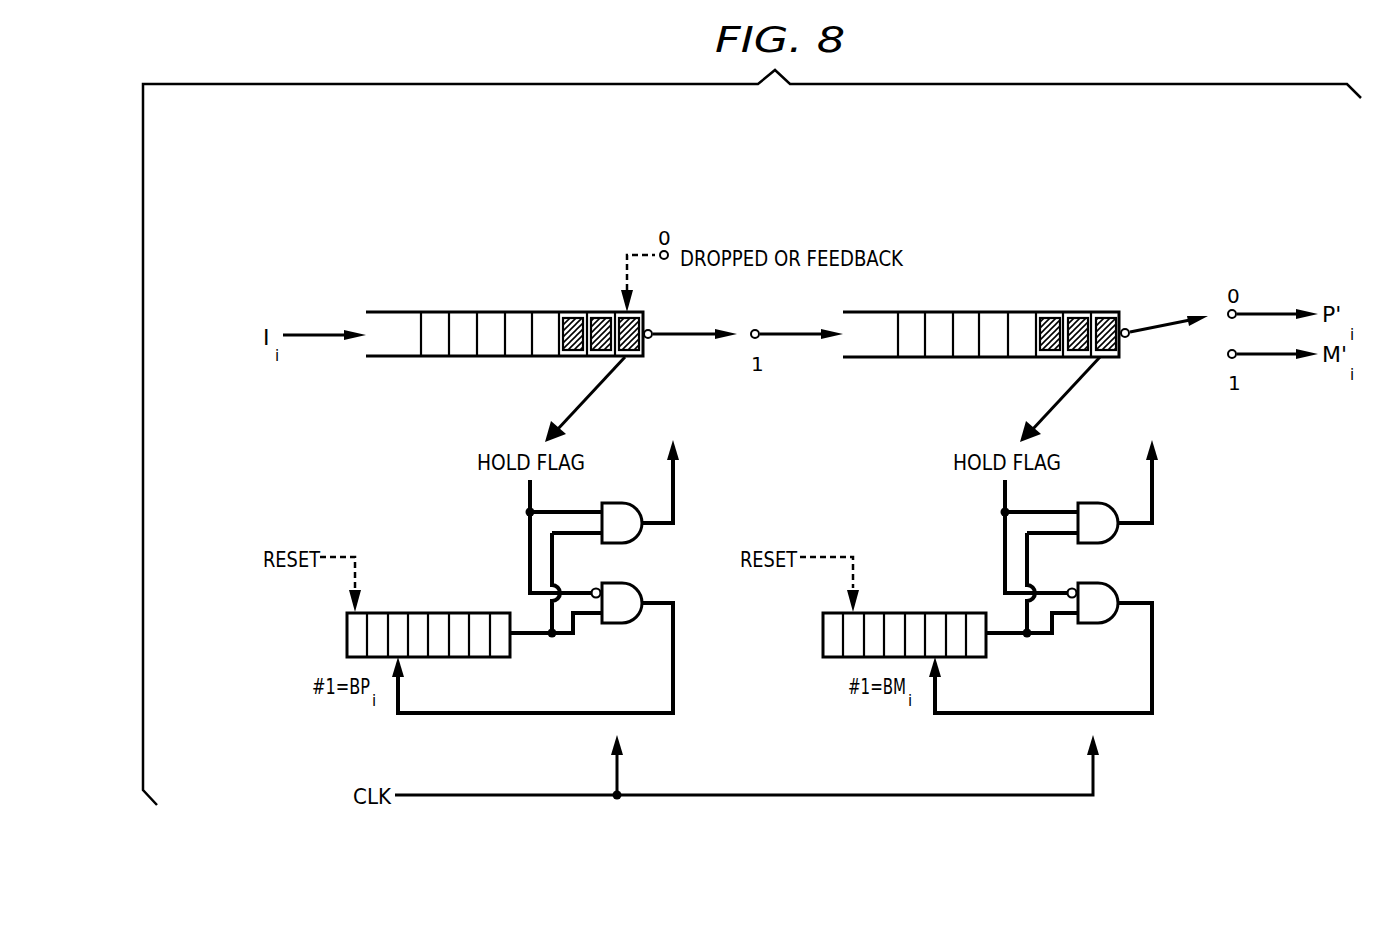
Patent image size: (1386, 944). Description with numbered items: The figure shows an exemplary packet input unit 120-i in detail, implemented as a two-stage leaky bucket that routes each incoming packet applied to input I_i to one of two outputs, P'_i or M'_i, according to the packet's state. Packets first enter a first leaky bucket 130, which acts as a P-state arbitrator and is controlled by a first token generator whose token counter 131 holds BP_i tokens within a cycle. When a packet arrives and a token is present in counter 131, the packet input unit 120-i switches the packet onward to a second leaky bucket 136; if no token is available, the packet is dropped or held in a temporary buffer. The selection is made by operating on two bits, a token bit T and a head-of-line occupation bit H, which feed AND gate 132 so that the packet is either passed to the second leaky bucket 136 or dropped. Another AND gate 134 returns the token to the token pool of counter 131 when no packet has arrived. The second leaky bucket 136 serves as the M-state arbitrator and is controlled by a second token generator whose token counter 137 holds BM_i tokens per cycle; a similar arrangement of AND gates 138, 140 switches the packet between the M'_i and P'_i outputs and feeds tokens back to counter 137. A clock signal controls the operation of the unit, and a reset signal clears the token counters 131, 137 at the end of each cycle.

The packet input unit 120-i is at (345, 160).
The first leaky bucket 130 is at (488, 311).
The second leaky bucket 136 is at (963, 311).
The token counter 131 is at (460, 612).
The token counter 137 is at (916, 612).
The AND gate 132 is at (612, 503).
The AND gate 134 is at (614, 626).
The AND gate 138 is at (1088, 503).
The AND gate 140 is at (1091, 626).